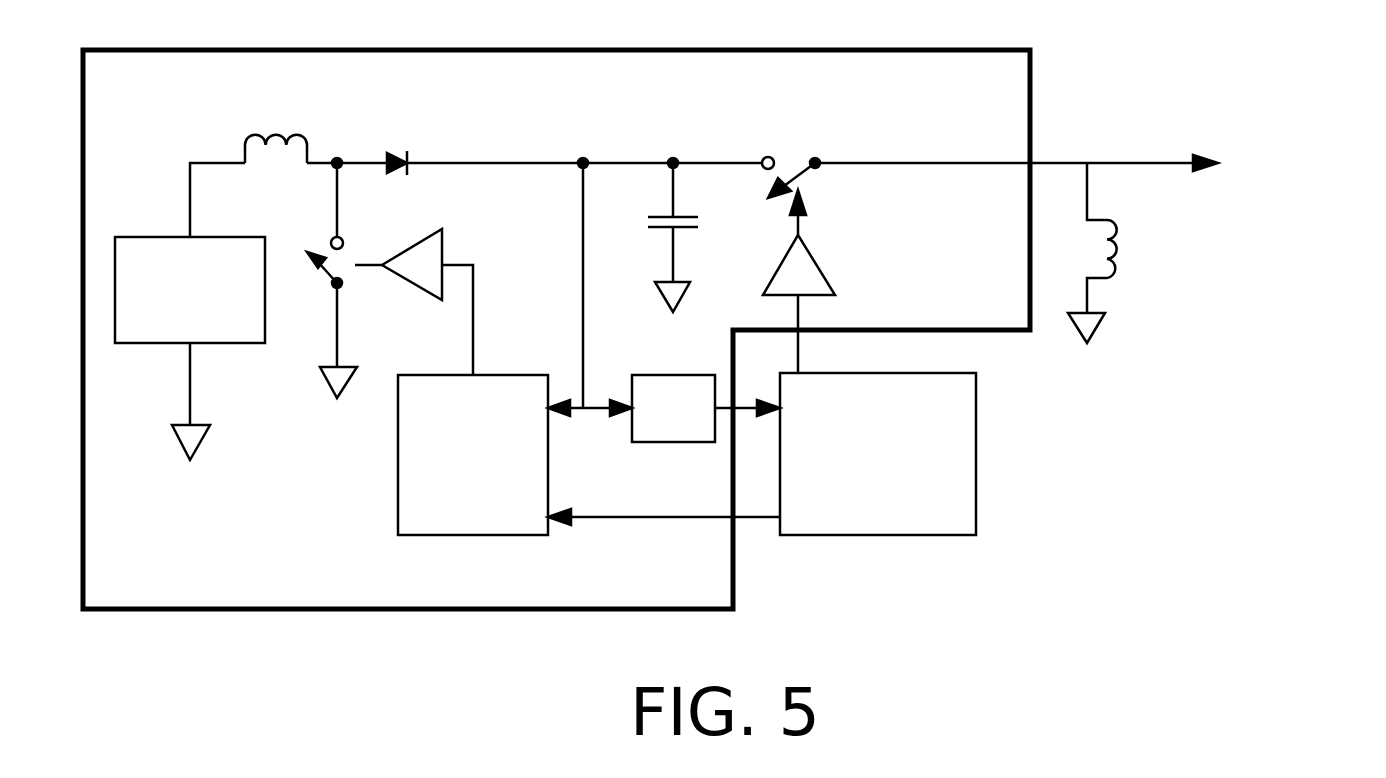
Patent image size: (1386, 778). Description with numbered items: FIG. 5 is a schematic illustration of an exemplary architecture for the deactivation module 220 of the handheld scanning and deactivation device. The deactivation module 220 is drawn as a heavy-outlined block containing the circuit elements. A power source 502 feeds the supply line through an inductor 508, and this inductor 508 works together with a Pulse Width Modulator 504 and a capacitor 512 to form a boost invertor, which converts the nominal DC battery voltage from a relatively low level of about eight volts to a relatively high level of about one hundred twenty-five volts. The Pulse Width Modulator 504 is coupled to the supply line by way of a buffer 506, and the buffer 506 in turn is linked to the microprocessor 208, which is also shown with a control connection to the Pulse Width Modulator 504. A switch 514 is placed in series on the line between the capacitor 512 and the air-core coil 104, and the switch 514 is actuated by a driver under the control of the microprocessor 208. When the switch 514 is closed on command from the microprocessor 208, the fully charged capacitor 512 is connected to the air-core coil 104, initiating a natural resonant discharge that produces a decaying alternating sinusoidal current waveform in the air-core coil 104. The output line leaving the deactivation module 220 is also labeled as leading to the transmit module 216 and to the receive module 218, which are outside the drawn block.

The deactivation module 220 is at (525, 110).
The inductor 508 is at (256, 121).
The capacitor 512 is at (602, 231).
The switch 514 is at (774, 146).
The air-core coil 104 is at (1057, 260).
The power source 502 is at (171, 315).
The Pulse Width Modulator 504 is at (454, 495).
The buffer 506 is at (654, 435).
The microprocessor 208 is at (860, 480).
The transmit module 216 is at (1302, 158).
The receive module 218 is at (1302, 246).